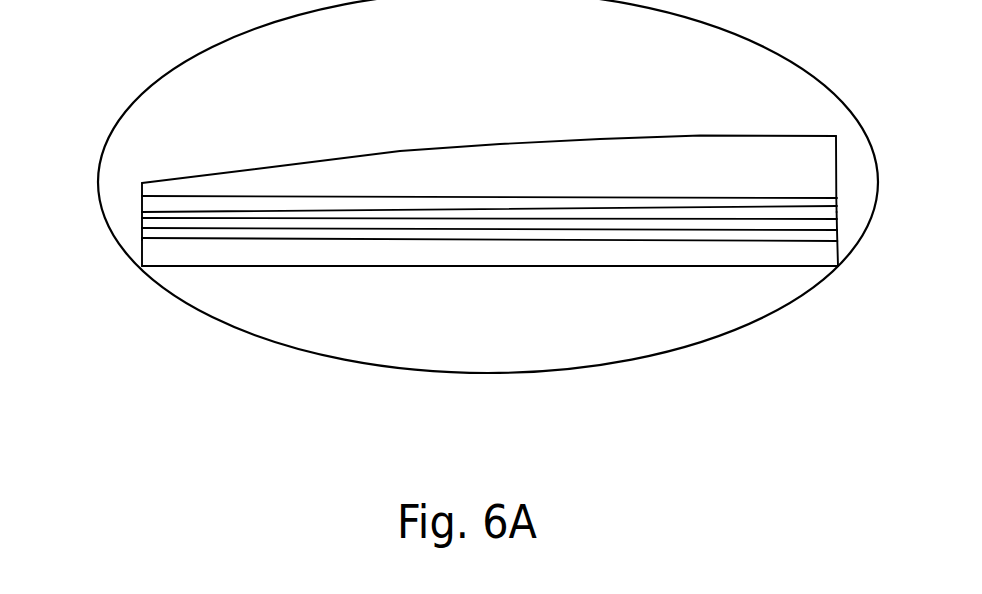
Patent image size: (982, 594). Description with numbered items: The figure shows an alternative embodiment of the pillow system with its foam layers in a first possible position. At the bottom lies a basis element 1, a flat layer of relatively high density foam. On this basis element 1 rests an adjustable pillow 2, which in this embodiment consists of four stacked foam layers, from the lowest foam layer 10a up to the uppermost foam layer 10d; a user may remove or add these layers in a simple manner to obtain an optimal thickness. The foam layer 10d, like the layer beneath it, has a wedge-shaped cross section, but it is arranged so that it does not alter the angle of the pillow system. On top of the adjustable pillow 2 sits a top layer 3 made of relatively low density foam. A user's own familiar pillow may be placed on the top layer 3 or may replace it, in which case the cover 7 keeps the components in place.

The basis element 1 is at (813, 262).
The adjustable pillow 2 is at (848, 214).
The top layer 3 is at (567, 148).
The cover 7 is at (762, 320).
The foam layer 10a is at (142, 238).
The foam layer 10d is at (142, 212).